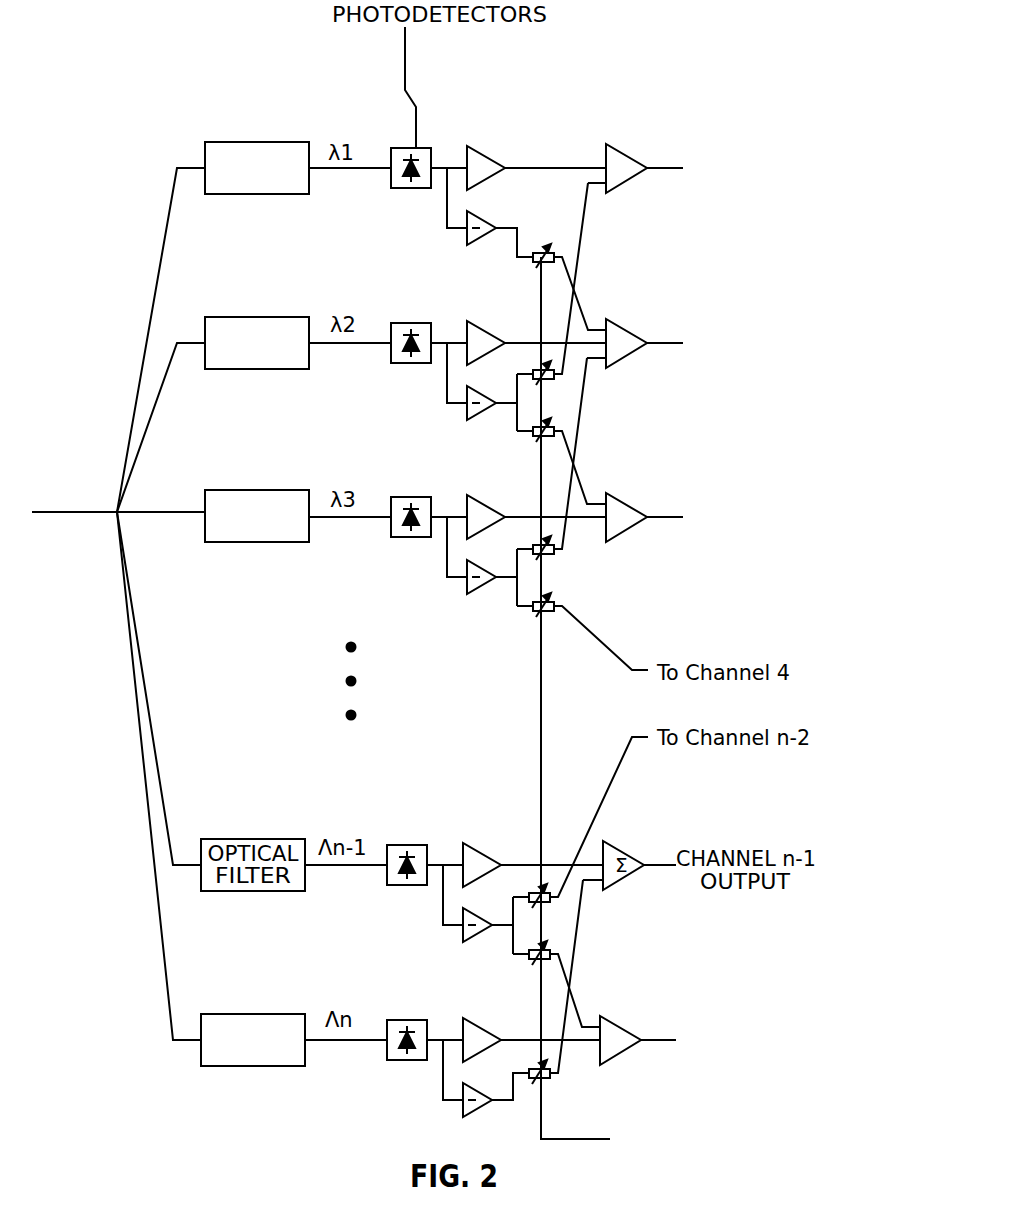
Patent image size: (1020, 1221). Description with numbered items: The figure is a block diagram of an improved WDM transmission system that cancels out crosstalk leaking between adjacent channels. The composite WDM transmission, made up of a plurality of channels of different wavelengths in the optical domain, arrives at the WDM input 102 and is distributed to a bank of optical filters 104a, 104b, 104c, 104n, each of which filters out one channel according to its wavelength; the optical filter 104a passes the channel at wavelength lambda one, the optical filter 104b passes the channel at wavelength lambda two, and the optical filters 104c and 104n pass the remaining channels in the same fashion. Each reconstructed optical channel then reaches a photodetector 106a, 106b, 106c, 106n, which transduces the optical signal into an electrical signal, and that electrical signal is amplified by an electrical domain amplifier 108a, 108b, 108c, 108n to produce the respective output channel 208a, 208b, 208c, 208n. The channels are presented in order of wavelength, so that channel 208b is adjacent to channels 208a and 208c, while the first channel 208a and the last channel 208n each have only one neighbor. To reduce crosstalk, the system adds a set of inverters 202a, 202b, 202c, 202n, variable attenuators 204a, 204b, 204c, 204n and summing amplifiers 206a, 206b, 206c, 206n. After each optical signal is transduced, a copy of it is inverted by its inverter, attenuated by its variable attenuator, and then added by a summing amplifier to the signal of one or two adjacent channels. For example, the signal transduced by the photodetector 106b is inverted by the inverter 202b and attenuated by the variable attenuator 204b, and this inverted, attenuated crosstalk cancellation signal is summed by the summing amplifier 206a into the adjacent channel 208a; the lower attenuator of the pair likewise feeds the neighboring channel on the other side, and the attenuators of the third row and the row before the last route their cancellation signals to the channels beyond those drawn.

The WDM input 102 is at (40, 515).
The optical filter 104a is at (225, 142).
The optical filter 104b is at (228, 317).
The optical filter 104c is at (228, 490).
The optical filter 104n is at (226, 1014).
The photodetector 106a is at (398, 148).
The photodetector 106b is at (398, 323).
The photodetector 106c is at (398, 497).
The photodetector 106n is at (394, 1020).
The electrical domain amplifier 108a is at (478, 149).
The electrical domain amplifier 108b is at (478, 323).
The electrical domain amplifier 108c is at (478, 498).
The electrical domain amplifier 108n is at (474, 1021).
The inverter 202a is at (480, 244).
The inverter 202b is at (480, 419).
The inverter 202c is at (480, 593).
The inverter 202n is at (476, 1116).
The variable attenuator 204a is at (536, 249).
The variable attenuator 204b is at (554, 424).
The variable attenuator 204c is at (554, 598).
The variable attenuator 204n is at (548, 1081).
The summing amplifier 206a is at (606, 150).
The summing amplifier 206b is at (606, 325).
The summing amplifier 206c is at (606, 500).
The summing amplifier 206n is at (602, 1022).
The channel 208a is at (816, 173).
The channel 208b is at (816, 349).
The channel 208c is at (816, 524).
The channel 208n is at (808, 1046).